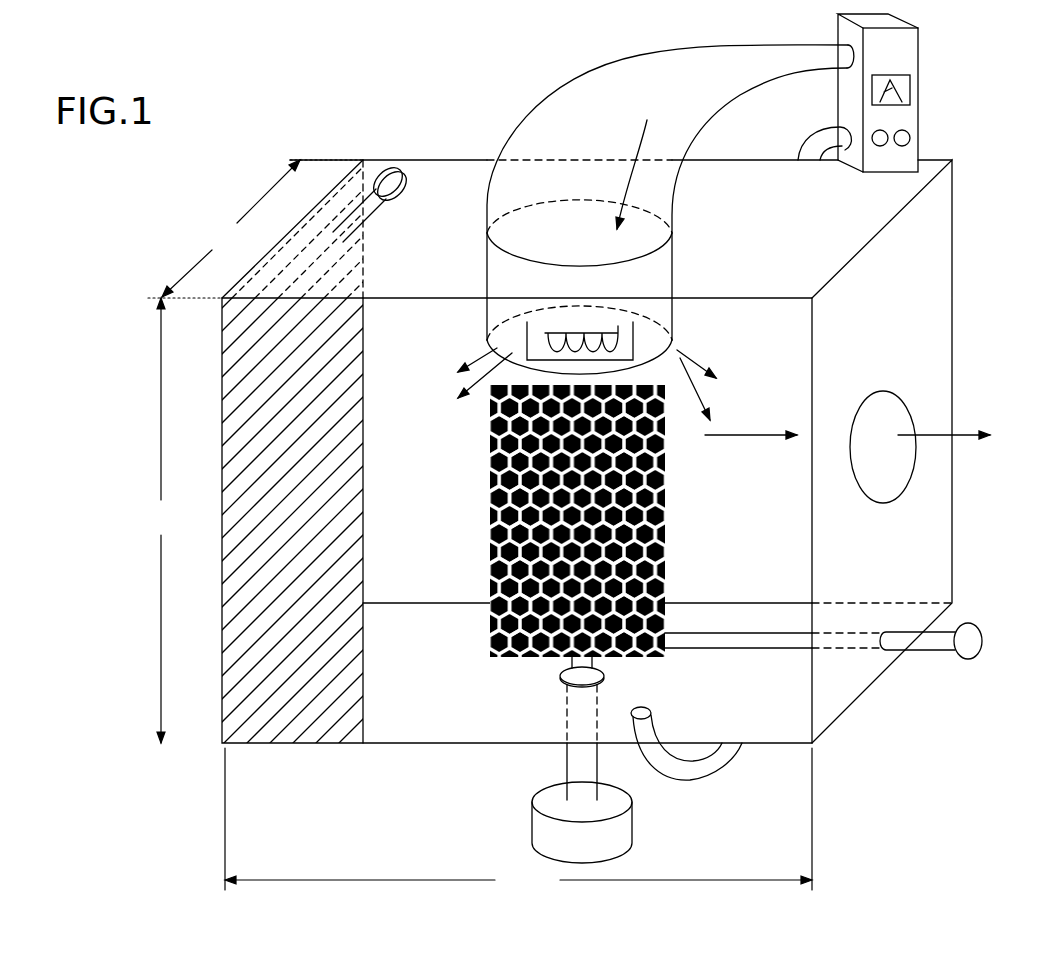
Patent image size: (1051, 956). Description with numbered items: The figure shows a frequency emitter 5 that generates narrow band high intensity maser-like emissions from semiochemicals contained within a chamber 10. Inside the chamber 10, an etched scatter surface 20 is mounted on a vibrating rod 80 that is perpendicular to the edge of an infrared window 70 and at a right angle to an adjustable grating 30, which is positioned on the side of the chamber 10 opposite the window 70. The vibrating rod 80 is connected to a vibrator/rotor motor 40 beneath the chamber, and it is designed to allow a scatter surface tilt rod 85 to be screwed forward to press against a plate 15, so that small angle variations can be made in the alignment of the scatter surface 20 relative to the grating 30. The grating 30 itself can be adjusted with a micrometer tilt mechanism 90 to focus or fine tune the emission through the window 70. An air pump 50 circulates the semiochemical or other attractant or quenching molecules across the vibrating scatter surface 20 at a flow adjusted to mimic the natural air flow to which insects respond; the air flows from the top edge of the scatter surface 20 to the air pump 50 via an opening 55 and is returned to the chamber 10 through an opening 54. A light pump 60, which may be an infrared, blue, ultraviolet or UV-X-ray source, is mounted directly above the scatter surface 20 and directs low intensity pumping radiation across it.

The frequency emitter 5 is at (306, 790).
The chamber 10 is at (300, 745).
The plate 15 is at (490, 535).
The scatter surface 20 is at (846, 498).
The adjustable grating 30 is at (345, 447).
The vibrator/rotor motor 40 is at (532, 825).
The air pump 50 is at (918, 58).
The opening 54 is at (650, 710).
The opening 55 is at (500, 250).
The light pump 60 is at (565, 332).
The infrared window 70 is at (878, 503).
The vibrating rod 80 is at (565, 752).
The scatter surface tilt rod 85 is at (976, 624).
The micrometer tilt mechanism 90 is at (405, 176).